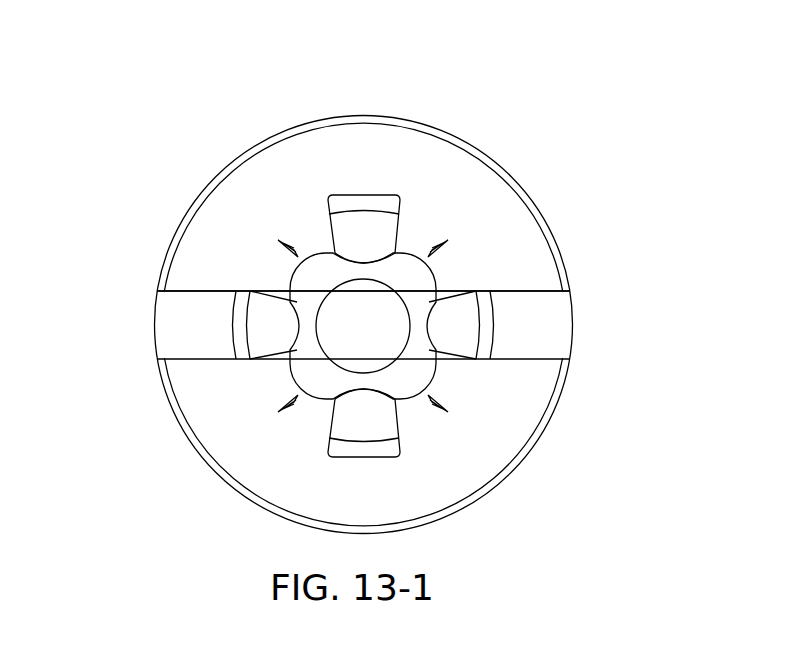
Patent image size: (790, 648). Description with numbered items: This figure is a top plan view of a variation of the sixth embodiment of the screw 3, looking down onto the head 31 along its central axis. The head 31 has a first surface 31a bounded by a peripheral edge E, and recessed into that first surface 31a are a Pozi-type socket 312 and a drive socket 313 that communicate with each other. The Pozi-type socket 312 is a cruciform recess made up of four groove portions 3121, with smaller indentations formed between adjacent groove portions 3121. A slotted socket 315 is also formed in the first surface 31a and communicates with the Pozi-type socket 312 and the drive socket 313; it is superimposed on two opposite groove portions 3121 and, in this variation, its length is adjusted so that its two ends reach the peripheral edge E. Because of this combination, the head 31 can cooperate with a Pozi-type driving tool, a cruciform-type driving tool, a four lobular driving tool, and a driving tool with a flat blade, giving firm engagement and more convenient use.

The screw 3 is at (243, 110).
The head 31 is at (218, 172).
The first surface 31a is at (230, 225).
The peripheral edge E is at (157, 290).
The slotted socket 315 is at (520, 290).
The Pozi-type socket 312 is at (380, 195).
The drive socket 313 is at (292, 378).
The groove portion 3121 is at (497, 343).